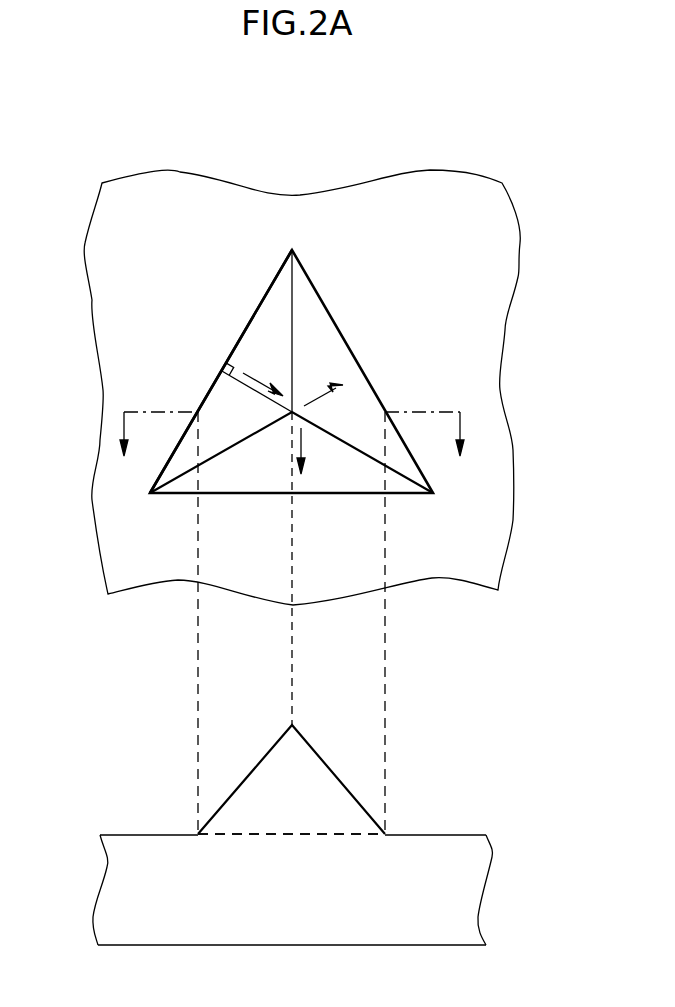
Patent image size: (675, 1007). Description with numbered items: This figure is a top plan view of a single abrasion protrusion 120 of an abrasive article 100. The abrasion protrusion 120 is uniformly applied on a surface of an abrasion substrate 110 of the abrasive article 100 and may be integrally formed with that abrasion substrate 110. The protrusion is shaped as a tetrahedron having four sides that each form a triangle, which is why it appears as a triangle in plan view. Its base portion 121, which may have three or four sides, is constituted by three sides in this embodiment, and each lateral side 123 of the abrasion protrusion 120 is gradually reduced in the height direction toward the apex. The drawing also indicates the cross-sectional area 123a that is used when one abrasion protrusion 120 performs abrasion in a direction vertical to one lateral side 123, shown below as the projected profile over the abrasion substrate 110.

The abrasive article 100 is at (318, 137).
The abrasion substrate 110 is at (138, 537).
The abrasion protrusion 120 is at (339, 349).
The base portion 121 is at (292, 837).
The lateral side 123 is at (260, 337).
The cross-sectional area 123a is at (327, 787).